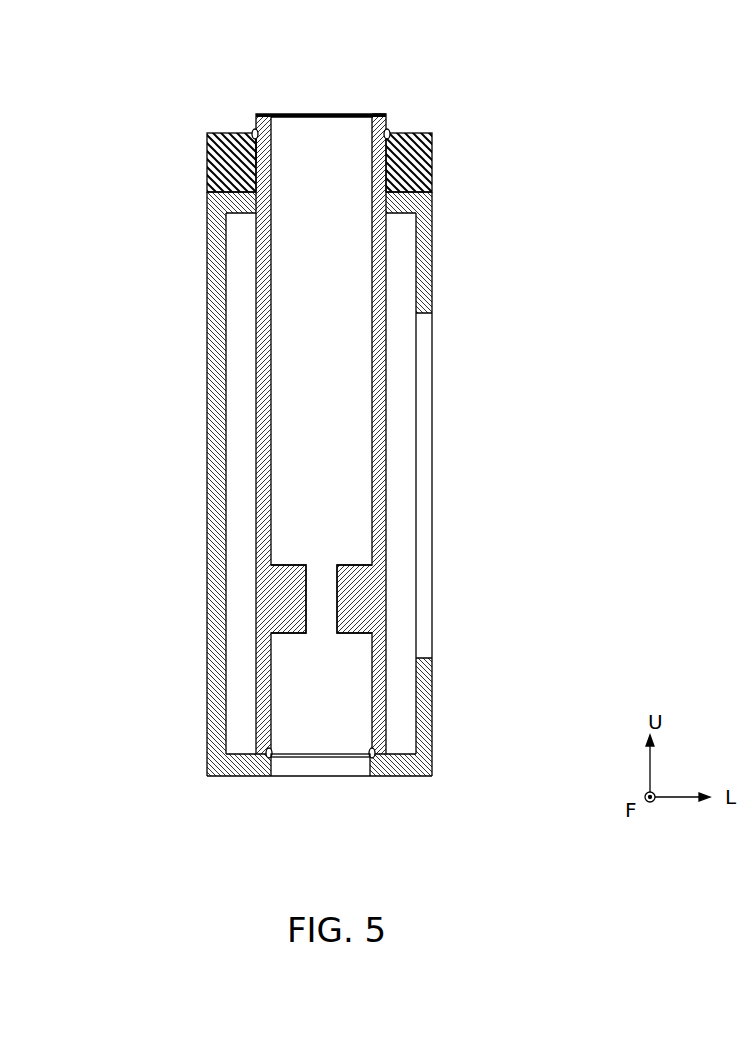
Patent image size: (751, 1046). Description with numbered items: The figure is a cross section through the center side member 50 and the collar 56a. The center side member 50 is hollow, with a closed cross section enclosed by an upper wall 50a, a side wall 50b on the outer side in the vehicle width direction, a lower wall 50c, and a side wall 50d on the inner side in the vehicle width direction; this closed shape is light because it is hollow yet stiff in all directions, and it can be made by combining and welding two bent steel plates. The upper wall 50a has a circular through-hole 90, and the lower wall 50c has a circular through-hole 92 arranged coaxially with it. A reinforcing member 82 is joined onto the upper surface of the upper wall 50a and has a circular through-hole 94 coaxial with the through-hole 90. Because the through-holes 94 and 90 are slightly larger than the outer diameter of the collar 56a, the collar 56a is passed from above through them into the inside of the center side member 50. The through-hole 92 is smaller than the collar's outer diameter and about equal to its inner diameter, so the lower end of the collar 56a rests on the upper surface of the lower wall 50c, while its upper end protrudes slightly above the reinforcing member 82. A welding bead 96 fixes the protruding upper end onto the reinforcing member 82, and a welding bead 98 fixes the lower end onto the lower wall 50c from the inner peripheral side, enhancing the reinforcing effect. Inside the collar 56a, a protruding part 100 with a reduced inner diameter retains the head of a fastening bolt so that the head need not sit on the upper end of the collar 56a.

The center side member 50 is at (339, 543).
The upper wall 50a is at (405, 203).
The side wall 50b is at (433, 260).
The lower wall 50c is at (400, 777).
The side wall 50d is at (207, 278).
The collar 56a is at (374, 114).
The reinforcing member 82 is at (433, 163).
The through-hole 90 is at (270, 200).
The through-hole 92 is at (272, 767).
The through-hole 94 is at (258, 153).
The welding bead 96 is at (254, 130).
The welding bead 98 is at (275, 752).
The protruding part 100 is at (305, 580).